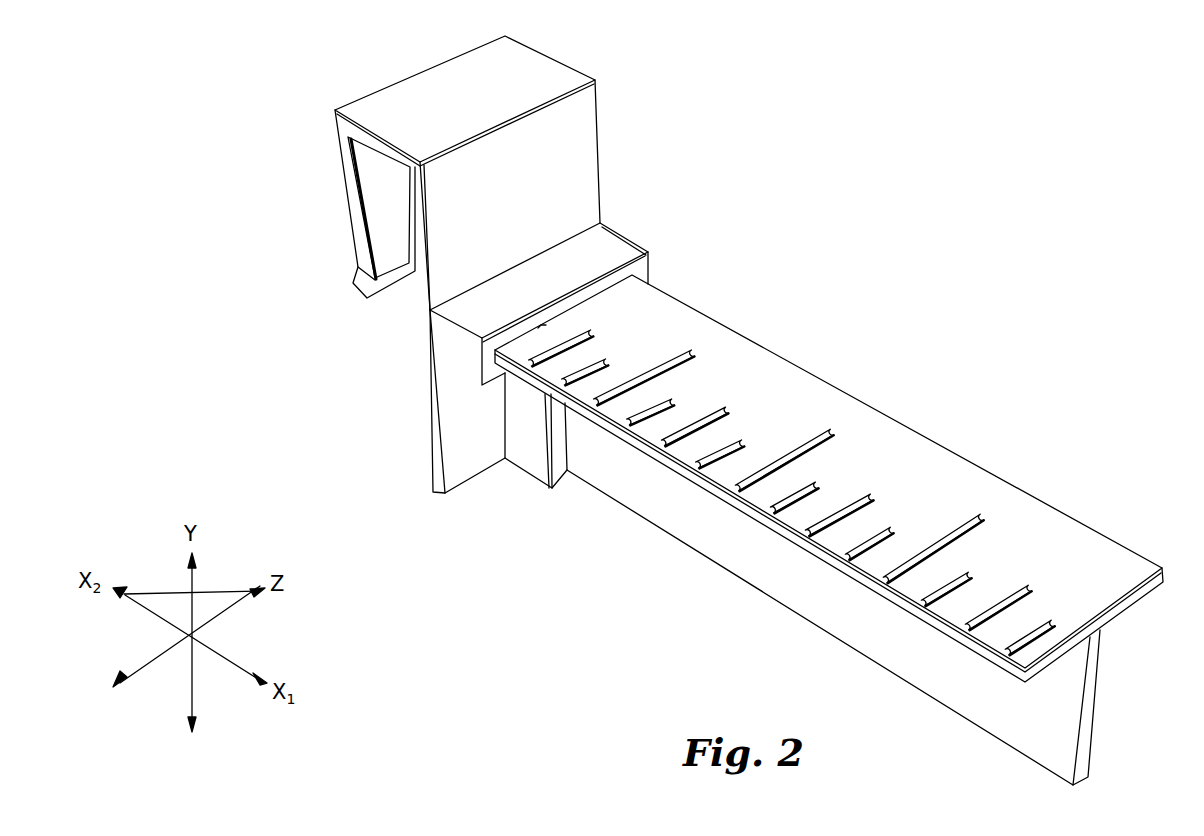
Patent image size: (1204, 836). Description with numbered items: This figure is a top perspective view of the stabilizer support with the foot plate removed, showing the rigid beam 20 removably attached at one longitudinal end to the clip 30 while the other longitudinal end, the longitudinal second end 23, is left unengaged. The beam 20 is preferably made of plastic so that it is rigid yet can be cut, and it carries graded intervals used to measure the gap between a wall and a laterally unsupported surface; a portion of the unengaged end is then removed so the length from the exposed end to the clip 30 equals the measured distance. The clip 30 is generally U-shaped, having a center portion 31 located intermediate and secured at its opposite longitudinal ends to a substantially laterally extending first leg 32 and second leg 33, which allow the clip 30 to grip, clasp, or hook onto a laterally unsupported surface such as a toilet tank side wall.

The beam 20 is at (1092, 555).
The longitudinal second end 23 is at (1125, 605).
The clip 30 is at (414, 90).
The center portion 31 is at (547, 70).
The first leg 32 is at (583, 120).
The second leg 33 is at (357, 210).